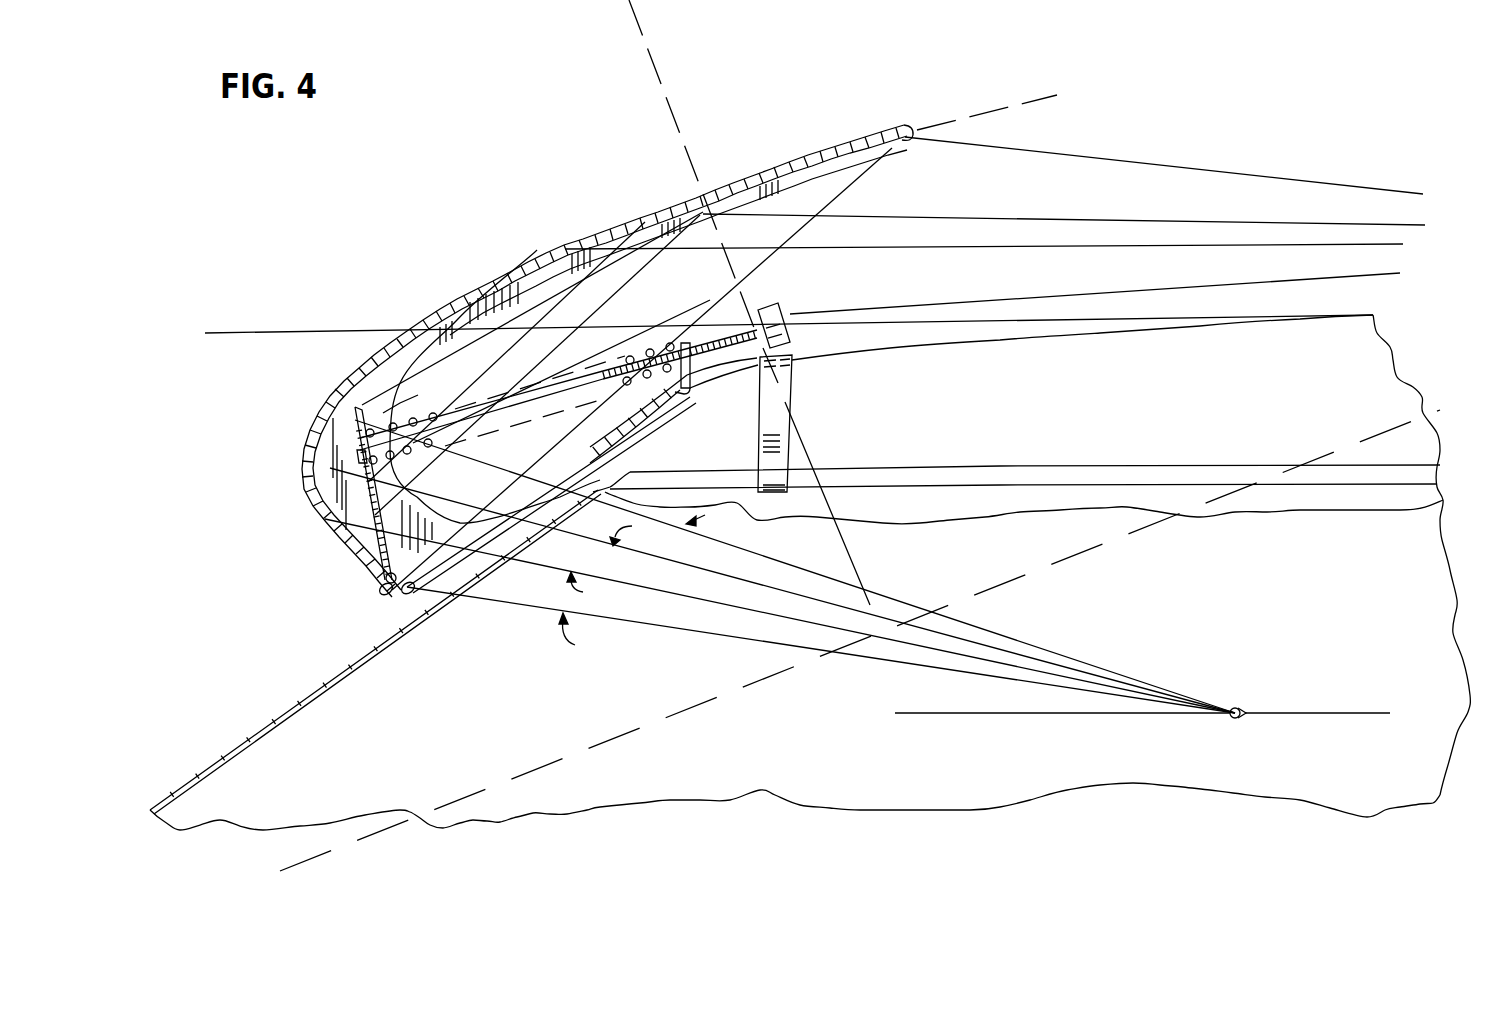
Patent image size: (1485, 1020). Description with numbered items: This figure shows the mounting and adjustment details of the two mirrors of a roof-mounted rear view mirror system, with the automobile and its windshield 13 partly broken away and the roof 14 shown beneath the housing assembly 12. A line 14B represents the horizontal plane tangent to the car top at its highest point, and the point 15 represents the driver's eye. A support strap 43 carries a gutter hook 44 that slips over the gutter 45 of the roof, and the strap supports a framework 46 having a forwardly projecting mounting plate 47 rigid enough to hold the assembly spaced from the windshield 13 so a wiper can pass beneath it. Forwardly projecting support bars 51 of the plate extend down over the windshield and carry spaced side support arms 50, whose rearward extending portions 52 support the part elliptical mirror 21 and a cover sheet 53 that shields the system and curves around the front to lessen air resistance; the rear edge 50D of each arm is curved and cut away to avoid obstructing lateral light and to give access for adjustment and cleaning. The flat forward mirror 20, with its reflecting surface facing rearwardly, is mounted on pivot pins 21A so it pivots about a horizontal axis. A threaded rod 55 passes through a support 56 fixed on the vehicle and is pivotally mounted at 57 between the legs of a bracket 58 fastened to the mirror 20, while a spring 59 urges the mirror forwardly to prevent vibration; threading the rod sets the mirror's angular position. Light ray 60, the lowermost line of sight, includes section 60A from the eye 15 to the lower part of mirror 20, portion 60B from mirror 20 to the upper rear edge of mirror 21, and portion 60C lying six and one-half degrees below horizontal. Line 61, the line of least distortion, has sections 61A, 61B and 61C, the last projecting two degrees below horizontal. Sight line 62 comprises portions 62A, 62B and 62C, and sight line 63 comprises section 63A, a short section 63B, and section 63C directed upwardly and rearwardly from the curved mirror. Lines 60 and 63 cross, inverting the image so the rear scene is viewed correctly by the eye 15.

The housing assembly 12 is at (490, 298).
The windshield 13 is at (270, 726).
The roof 14 is at (1340, 398).
The horizontal tangent plane line 14B is at (303, 332).
The eye of the viewer 15 is at (1243, 710).
The flat forward mirror 20 is at (360, 535).
The elliptical mirror 21 is at (660, 240).
The pivot pin 21A is at (381, 592).
The support strap 43 is at (792, 388).
The gutter hook 44 is at (777, 481).
The gutter 45 is at (975, 466).
The framework 46 is at (697, 400).
The mounting plate 47 is at (600, 464).
The side support arm 50 is at (345, 405).
The rear edge of support arm 50D is at (400, 403).
The forwardly projecting support bar 51 is at (430, 563).
The rearward extending portion of arm 52 is at (518, 292).
The cover sheet 53 is at (808, 150).
The threaded rod 55 is at (723, 333).
The support 56 is at (690, 393).
The pivotal mounting 57 is at (357, 453).
The bracket 58 is at (360, 461).
The spring 59 is at (628, 362).
The light ray 60 is at (582, 636).
The line of least distortion 61 is at (590, 587).
The sight line 62 is at (637, 530).
The sight line 63 is at (710, 518).
The light ray section 60A is at (670, 627).
The line section 61A is at (667, 590).
The line portion 62A is at (692, 575).
The line section 63A is at (777, 560).
The light ray portion 60B is at (554, 432).
The line section 61B is at (547, 356).
The line portion 62B is at (460, 409).
The line section 63B is at (368, 400).
The light ray portion 60C is at (1082, 157).
The line section 61C is at (1076, 214).
The line portion 62C is at (1079, 246).
The line section 63C is at (1216, 285).